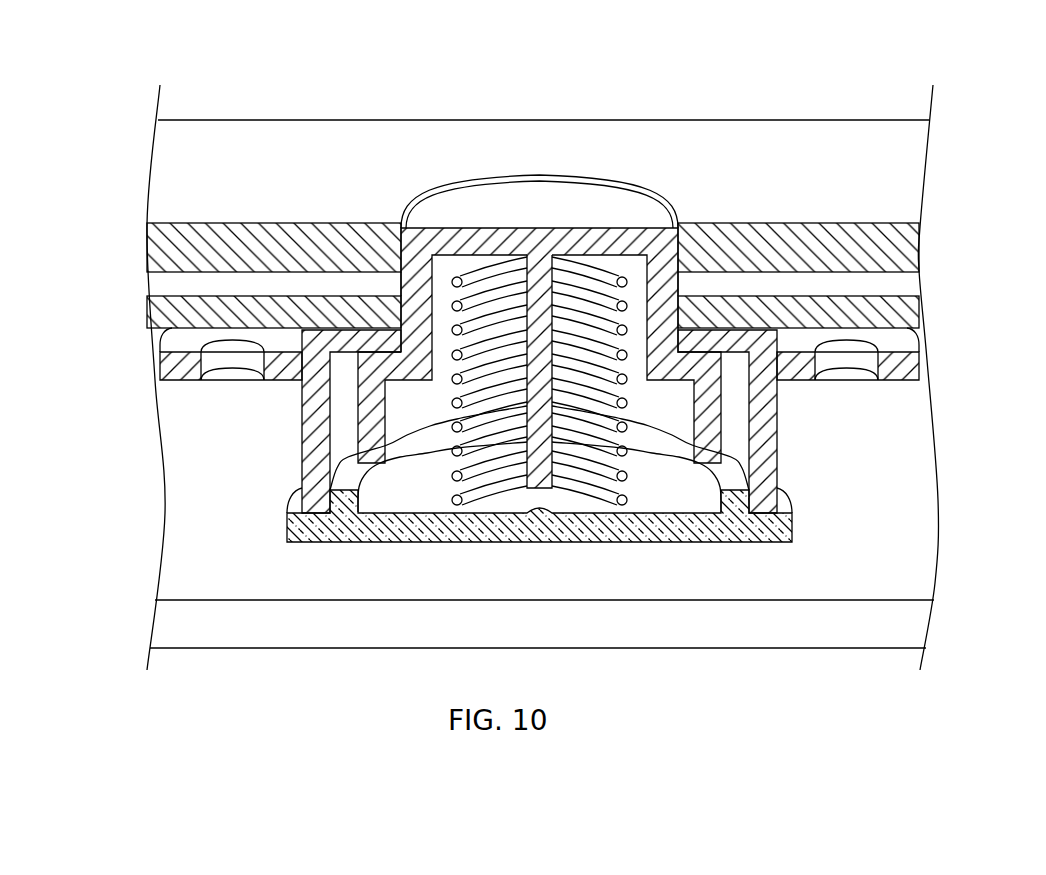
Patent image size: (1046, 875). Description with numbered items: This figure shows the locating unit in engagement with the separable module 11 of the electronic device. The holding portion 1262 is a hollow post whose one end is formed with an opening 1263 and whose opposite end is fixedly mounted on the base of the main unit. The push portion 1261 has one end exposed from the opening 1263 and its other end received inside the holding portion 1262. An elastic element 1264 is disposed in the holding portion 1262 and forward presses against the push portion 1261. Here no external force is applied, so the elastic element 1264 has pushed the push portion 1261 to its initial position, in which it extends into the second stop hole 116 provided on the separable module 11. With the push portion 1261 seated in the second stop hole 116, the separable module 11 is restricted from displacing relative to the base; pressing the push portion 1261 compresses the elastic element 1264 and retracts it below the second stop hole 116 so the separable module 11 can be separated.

The separable module 11 is at (845, 197).
The second stop hole 116 is at (677, 223).
The push portion 1261 is at (473, 195).
The holding portion 1262 is at (760, 353).
The opening 1263 is at (400, 345).
The elastic element 1264 is at (607, 267).